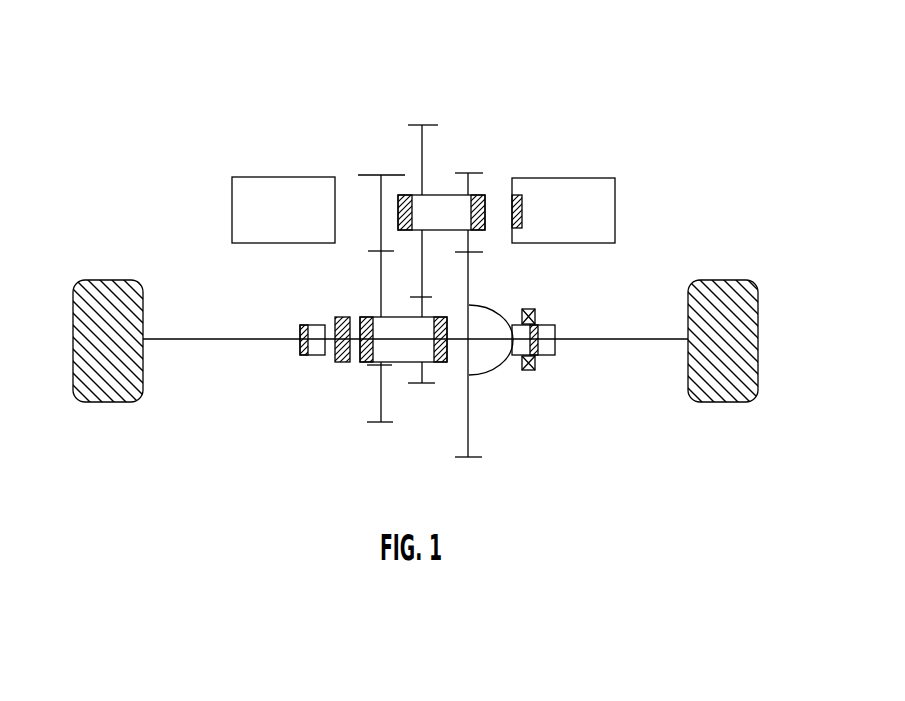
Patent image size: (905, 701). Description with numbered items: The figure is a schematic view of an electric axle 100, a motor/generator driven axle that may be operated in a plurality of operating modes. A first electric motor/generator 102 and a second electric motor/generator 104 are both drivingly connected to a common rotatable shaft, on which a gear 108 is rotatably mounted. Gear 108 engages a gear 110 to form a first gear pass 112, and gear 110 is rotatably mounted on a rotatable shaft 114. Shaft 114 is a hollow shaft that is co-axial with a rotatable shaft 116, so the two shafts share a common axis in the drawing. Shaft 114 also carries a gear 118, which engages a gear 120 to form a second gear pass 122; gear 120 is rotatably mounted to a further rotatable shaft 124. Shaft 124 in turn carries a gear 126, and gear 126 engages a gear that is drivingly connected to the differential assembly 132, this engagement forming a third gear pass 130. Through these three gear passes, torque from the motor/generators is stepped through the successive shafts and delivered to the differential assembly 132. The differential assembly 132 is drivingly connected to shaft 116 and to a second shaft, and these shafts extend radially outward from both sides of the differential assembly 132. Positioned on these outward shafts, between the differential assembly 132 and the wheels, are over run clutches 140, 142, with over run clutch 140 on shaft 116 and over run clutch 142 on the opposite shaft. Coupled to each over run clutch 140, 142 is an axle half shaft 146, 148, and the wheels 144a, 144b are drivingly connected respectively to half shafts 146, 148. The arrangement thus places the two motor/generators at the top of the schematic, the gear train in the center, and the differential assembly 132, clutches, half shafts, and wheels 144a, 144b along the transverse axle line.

The electric axle 100 is at (638, 133).
The first electric motor/generator 102 is at (282, 222).
The second electric motor/generator 104 is at (593, 222).
The gear 108 is at (381, 228).
The gear 110 is at (382, 408).
The gear pass 112 is at (370, 112).
The rotatable shaft 114 is at (390, 317).
The rotatable shaft 116 is at (462, 335).
The gear 118 is at (483, 493).
The gear 120 is at (423, 194).
The gear pass 122 is at (418, 57).
The rotatable shaft 124 is at (437, 193).
The gear 126 is at (470, 220).
The gear pass 130 is at (497, 108).
The differential assembly 132 is at (482, 300).
The over run clutch 140 is at (312, 355).
The over run clutch 142 is at (537, 323).
The wheel 144a is at (94, 280).
The wheel 144b is at (733, 280).
The axle half shaft 146 is at (193, 340).
The axle half shaft 148 is at (623, 340).